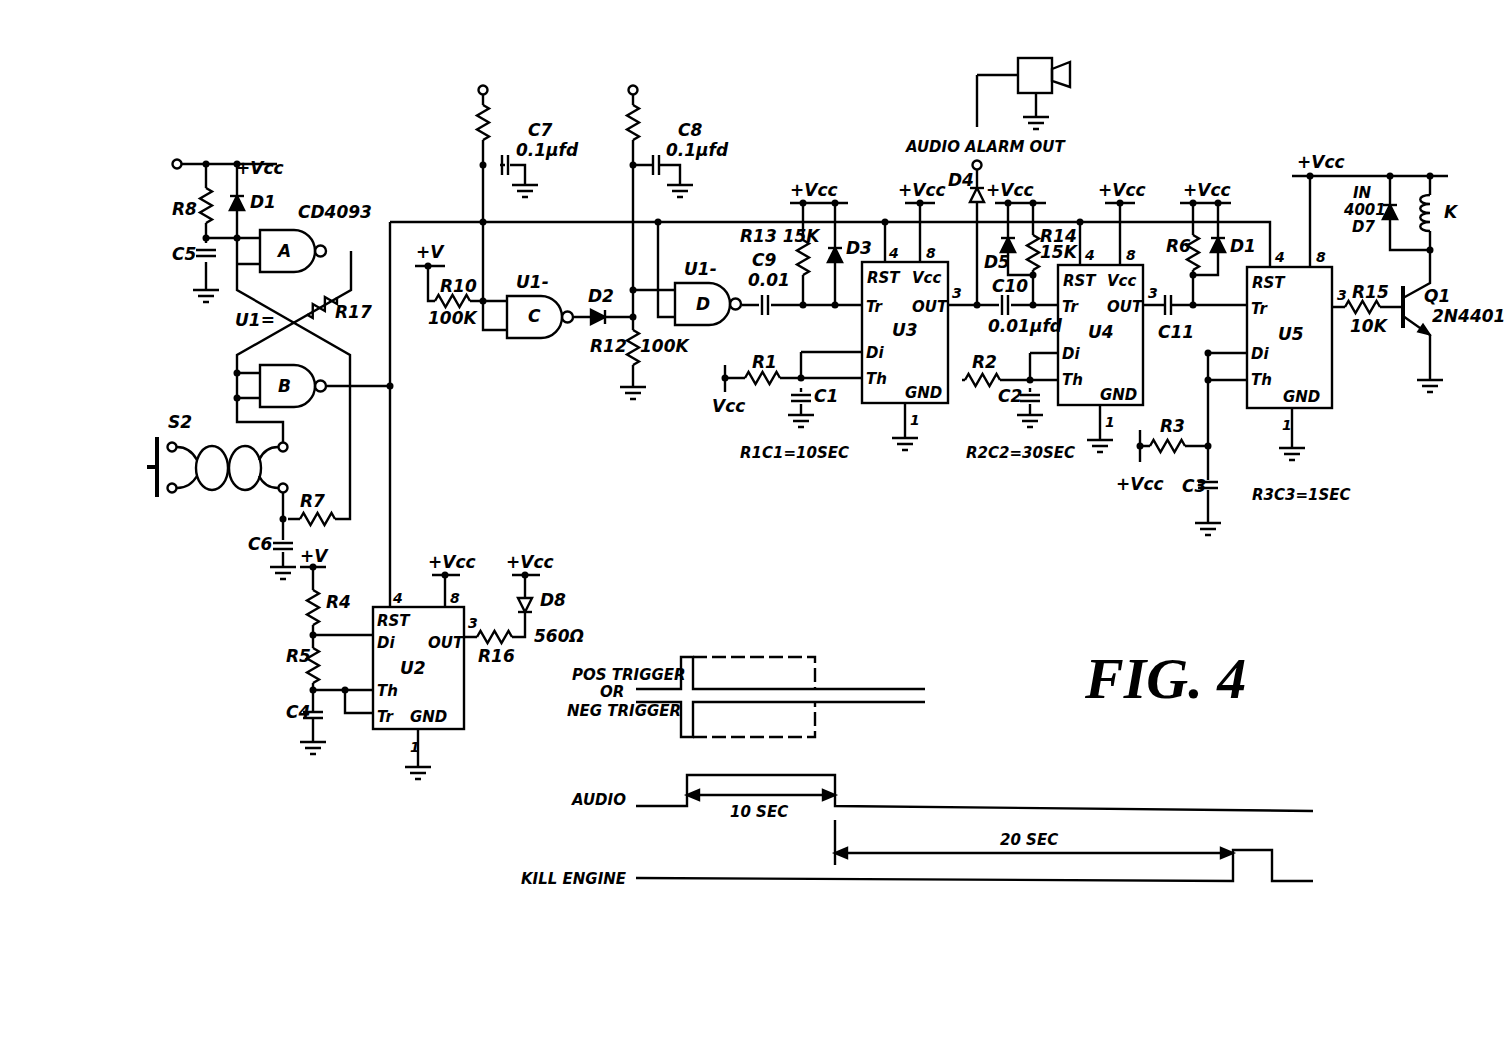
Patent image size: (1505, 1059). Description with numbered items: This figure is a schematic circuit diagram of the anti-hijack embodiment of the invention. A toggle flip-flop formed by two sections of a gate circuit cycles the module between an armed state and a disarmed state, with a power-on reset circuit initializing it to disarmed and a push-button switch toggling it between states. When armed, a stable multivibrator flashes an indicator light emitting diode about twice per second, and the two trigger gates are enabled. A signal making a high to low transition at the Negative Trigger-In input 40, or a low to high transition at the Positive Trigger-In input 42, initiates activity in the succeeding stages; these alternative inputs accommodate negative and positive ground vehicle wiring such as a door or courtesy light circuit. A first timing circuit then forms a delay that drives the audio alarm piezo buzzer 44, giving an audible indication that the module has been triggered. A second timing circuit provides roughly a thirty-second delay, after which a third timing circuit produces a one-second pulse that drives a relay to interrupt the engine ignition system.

The Negative Trigger-In input 40 is at (481, 189).
The Positive Trigger-In input 42 is at (645, 223).
The audio alarm piezo buzzer 44 is at (1023, 87).